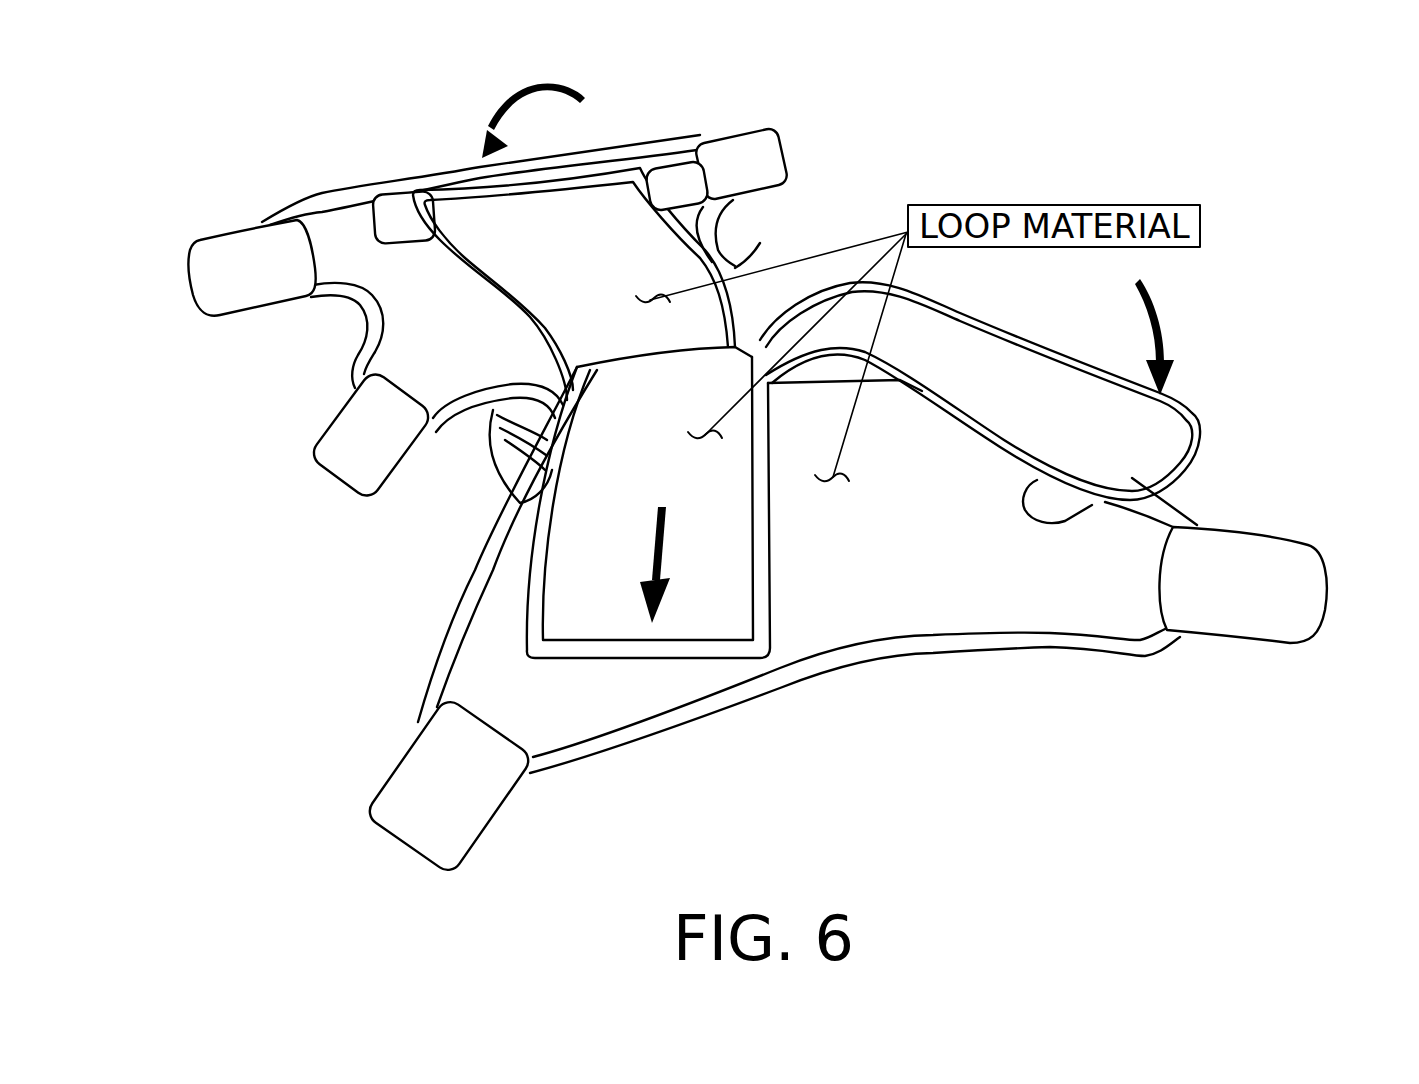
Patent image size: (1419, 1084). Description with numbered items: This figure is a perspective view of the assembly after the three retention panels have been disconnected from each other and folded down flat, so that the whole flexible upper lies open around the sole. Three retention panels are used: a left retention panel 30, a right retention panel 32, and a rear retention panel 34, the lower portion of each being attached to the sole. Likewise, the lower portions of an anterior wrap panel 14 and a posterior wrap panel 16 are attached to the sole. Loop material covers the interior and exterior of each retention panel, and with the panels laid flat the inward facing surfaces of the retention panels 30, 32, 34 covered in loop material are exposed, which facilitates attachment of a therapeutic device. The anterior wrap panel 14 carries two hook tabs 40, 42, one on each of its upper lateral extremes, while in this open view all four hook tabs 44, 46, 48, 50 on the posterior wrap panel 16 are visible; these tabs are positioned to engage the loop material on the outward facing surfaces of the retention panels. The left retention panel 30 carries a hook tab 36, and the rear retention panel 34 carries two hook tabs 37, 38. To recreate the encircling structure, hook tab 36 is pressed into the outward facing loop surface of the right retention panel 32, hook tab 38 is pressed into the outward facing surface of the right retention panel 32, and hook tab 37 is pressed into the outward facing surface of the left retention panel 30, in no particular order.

The anterior wrap panel 14 is at (725, 708).
The posterior wrap panel 16 is at (325, 193).
The left retention panel 30 is at (1193, 403).
The right retention panel 32 is at (527, 622).
The rear retention panel 34 is at (473, 197).
The hook tab 36 is at (1050, 507).
The hook tab 37 is at (672, 185).
The hook tab 38 is at (395, 212).
The hook tab 40 is at (1273, 535).
The hook tab 42 is at (380, 840).
The hook tab 44 is at (323, 487).
The hook tab 46 is at (208, 242).
The hook tab 48 is at (780, 127).
The hook tab 50 is at (660, 297).